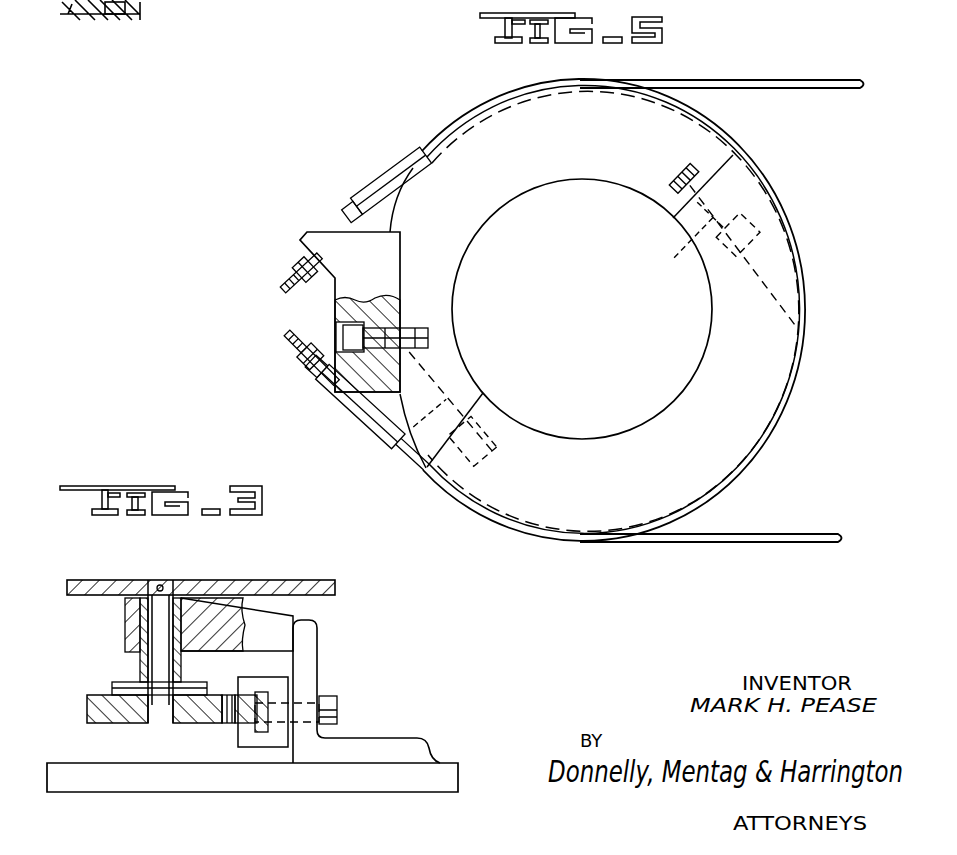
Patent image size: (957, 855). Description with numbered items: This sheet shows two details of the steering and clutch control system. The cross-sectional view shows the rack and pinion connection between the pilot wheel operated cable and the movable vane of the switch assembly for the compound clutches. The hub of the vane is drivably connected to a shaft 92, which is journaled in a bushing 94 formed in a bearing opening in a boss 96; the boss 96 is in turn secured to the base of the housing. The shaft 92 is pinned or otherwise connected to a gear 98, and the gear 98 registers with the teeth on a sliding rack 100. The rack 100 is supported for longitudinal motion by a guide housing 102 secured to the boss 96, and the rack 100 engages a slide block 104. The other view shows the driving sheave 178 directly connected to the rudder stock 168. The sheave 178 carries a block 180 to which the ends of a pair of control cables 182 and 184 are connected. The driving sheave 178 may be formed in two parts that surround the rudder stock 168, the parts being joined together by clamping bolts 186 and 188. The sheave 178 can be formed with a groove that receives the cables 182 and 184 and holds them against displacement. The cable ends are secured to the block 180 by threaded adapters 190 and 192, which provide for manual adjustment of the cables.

In FIG. 3, the shaft 92 is at (155, 627).
In FIG. 3, the bushing 94 is at (140, 657).
In FIG. 3, the boss 96 is at (285, 643).
In FIG. 3, the gear 98 is at (100, 723).
In FIG. 3, the sliding rack 100 is at (248, 729).
In FIG. 3, the guide housing 102 is at (280, 682).
In FIG. 3, the slide block 104 is at (262, 732).
In FIG. 5, the rudder stock 168 is at (615, 377).
In FIG. 5, the driving sheave 178 is at (537, 500).
In FIG. 5, the block 180 is at (395, 368).
In FIG. 5, the control cable 182 is at (680, 535).
In FIG. 5, the control cable 184 is at (770, 80).
In FIG. 5, the clamping bolt 186 is at (449, 412).
In FIG. 5, the clamping bolt 188 is at (731, 254).
In FIG. 5, the threaded adapter 190 is at (342, 395).
In FIG. 5, the threaded adapter 192 is at (345, 225).